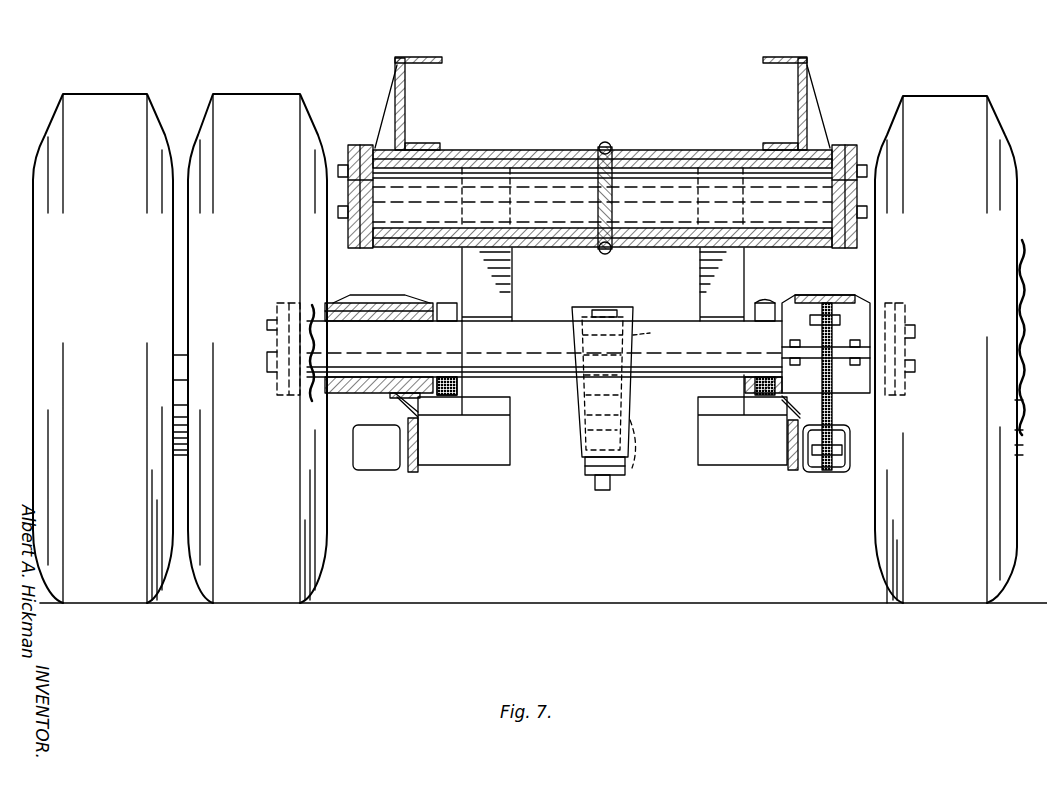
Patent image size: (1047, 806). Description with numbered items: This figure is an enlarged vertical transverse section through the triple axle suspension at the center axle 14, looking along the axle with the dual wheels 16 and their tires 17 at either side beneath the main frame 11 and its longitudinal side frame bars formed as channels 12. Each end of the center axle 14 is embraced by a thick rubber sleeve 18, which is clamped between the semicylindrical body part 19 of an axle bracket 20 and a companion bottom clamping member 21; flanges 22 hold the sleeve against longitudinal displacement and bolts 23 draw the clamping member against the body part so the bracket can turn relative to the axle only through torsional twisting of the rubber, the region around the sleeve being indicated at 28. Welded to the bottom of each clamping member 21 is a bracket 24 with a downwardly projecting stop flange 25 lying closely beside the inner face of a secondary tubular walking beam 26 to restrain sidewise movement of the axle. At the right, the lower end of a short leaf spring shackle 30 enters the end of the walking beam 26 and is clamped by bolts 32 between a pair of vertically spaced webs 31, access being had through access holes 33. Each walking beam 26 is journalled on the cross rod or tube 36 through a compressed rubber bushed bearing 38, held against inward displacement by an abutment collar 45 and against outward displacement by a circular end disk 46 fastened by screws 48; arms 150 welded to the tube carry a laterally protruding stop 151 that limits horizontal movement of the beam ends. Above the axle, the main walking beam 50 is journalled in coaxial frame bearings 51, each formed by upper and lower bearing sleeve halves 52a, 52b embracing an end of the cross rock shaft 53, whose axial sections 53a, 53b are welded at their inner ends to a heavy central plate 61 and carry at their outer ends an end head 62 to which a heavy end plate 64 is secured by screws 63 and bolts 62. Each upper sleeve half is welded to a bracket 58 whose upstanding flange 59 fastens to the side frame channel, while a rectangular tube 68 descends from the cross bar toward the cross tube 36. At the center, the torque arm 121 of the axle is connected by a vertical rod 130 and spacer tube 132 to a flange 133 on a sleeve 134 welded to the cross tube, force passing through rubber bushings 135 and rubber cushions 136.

The main frame 11 is at (601, 78).
The inwardly opening channels 12 is at (440, 62).
The center axle 14 is at (683, 321).
The dual wheels 16 is at (215, 87).
The tires 17 is at (960, 97).
The rubber sleeve 18 is at (380, 321).
The body part 19 is at (580, 322).
The axle bracket 20 is at (375, 295).
The bottom clamping member 21 is at (322, 396).
The flanges 22 is at (452, 308).
The bolts 23 is at (905, 318).
The bracket 24 is at (398, 398).
The stop flange 25 is at (414, 474).
The secondary tubular walking beam 26 is at (643, 494).
The hub cap cover 28 is at (392, 295).
The leaf spring shackle 30 is at (832, 372).
The webs 31 is at (810, 472).
The bolts 32 is at (850, 455).
The access holes 33 is at (843, 447).
The cross rod or tube 36 is at (670, 380).
The rubber bushed bearing 38 is at (602, 409).
The abutment ring or collar 45 is at (448, 395).
The circular end head or disk 46 is at (278, 305).
The screws 48 is at (270, 340).
The main walking beam 50 is at (750, 285).
The frame bearings 51 is at (618, 180).
The upper half of bearing sleeve 52a is at (500, 168).
The lower half of bearing sleeve 52b is at (603, 284).
The cross rock shaft 53 is at (578, 228).
The axial section 53a is at (486, 198).
The axial section 53b is at (682, 198).
The bracket 58 is at (375, 122).
The upstanding flange 59 is at (395, 72).
The heavy plate or block 61 is at (605, 250).
The end head or disk 62 is at (348, 186).
The screws 63 is at (338, 171).
The heavy end plate or block 64 is at (348, 236).
The tube 68 is at (512, 285).
The torque arm 121 is at (606, 403).
The vertical rod 130 is at (602, 490).
The spacer tube 132 is at (572, 396).
The flange 133 is at (572, 340).
The sleeve 134 is at (628, 307).
The rubber bushings 135 is at (628, 470).
The rubber cushions 136 is at (640, 336).
The arms 150 is at (612, 433).
The stop 151 is at (466, 465).